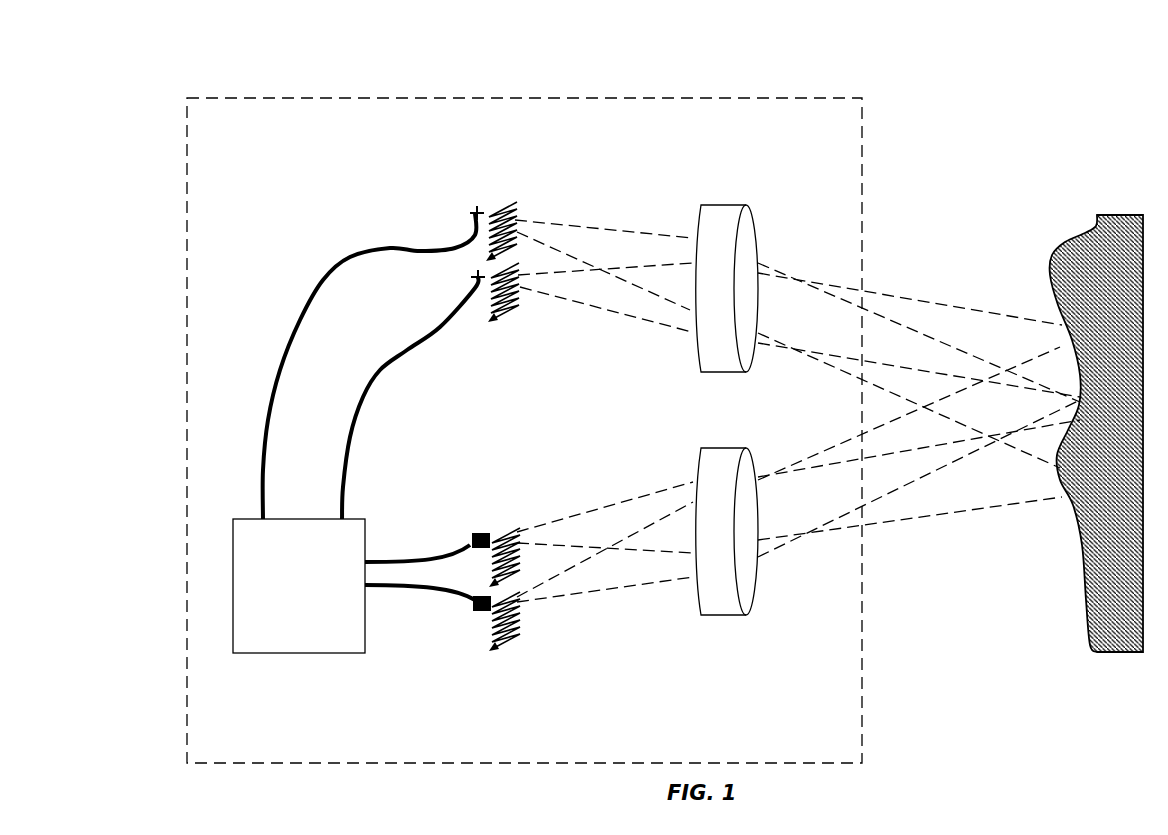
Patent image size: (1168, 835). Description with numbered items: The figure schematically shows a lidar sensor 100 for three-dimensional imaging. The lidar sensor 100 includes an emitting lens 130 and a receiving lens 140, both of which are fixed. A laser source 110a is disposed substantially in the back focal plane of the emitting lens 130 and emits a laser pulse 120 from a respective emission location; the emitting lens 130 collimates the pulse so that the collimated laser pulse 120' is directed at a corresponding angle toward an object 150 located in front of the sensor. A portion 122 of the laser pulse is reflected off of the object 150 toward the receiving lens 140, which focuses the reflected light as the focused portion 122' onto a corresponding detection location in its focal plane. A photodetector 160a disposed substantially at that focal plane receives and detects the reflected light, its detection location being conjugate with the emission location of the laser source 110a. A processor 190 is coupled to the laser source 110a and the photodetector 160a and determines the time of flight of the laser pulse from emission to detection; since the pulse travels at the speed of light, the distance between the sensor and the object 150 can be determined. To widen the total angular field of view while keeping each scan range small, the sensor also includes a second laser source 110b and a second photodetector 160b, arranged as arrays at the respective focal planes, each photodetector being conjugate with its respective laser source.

The lidar sensor 100 is at (530, 97).
The laser source 110a is at (478, 207).
The second laser source 110b is at (475, 300).
The laser pulse 120 is at (603, 249).
The collimated laser pulse 120' is at (919, 351).
The portion of the laser pulse 122 is at (919, 459).
The focused portion of the laser pulse 122' is at (605, 529).
The emitting lens 130 is at (760, 236).
The receiving lens 140 is at (758, 600).
The object 150 is at (1092, 226).
The photodetector 160a is at (478, 533).
The second photodetector 160b is at (478, 613).
The processor 190 is at (297, 655).